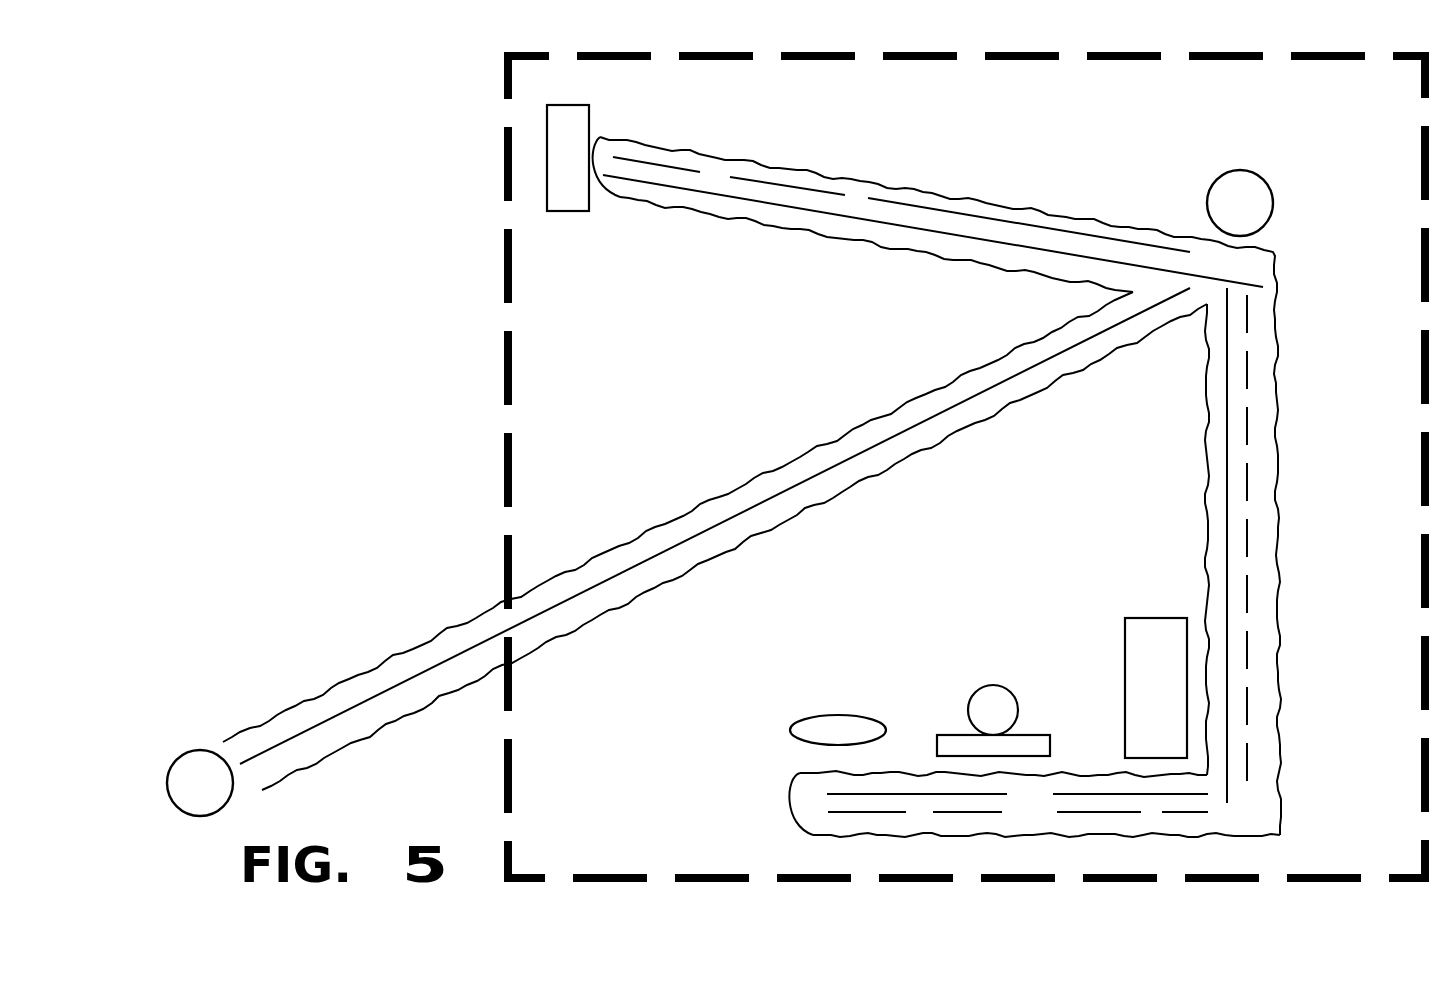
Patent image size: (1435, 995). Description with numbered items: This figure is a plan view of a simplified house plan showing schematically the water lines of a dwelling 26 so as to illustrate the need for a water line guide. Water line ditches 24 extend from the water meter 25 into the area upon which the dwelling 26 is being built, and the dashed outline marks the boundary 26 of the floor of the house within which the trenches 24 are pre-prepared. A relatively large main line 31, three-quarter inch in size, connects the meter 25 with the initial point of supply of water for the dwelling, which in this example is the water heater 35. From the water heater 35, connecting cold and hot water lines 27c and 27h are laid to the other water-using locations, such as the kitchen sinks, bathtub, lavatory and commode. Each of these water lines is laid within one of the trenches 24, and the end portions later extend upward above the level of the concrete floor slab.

The water line ditches 24 is at (1083, 218).
The water meter 25 is at (188, 750).
The dwelling 26 is at (1193, 60).
The hot water line 27h is at (777, 184).
The cold water line 27c is at (908, 228).
The main line 31 is at (785, 492).
The water heater 35 is at (1215, 176).